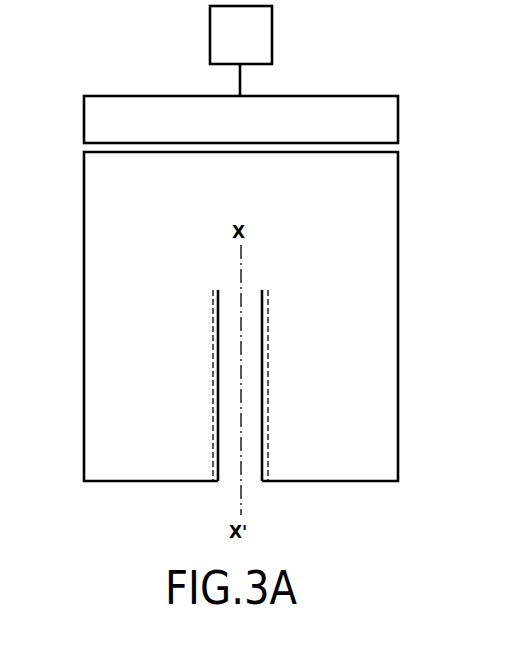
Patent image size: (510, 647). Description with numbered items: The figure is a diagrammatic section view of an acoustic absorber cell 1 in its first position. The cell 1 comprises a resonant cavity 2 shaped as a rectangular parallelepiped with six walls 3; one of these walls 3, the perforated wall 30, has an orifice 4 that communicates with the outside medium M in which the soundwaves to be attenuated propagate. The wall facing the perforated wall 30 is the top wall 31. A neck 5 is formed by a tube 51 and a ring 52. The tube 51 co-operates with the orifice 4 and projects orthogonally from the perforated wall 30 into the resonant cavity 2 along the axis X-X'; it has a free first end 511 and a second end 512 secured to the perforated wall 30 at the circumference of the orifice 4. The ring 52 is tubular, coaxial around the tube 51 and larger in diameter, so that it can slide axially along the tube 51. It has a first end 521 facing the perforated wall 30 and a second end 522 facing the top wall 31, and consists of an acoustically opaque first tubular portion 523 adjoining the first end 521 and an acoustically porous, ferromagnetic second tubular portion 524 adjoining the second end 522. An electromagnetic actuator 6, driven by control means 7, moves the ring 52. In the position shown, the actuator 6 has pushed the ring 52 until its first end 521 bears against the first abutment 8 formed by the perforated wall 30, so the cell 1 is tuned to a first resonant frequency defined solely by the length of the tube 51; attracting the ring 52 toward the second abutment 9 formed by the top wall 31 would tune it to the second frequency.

The acoustic absorber cell 1 is at (78, 72).
The resonant cavity 2 is at (366, 248).
The walls 3 is at (106, 155).
The perforated wall 30 is at (131, 483).
The top wall 31 is at (368, 153).
The orifice 4 is at (252, 478).
The neck 5 is at (254, 379).
The tube 51 is at (249, 382).
The first end of the tube 511 is at (262, 286).
The second end of the tube 512 is at (218, 486).
The ring 52 is at (188, 349).
The first end of the ring 521 is at (210, 477).
The second end of the ring 522 is at (212, 286).
The first tubular portion 523 is at (213, 405).
The second tubular portion 524 is at (213, 320).
The electromagnetic actuator 6 is at (247, 132).
The control means 7 is at (247, 48).
The first abutment 8 is at (330, 480).
The second abutment 9 is at (330, 153).
The outside medium M is at (50, 325).